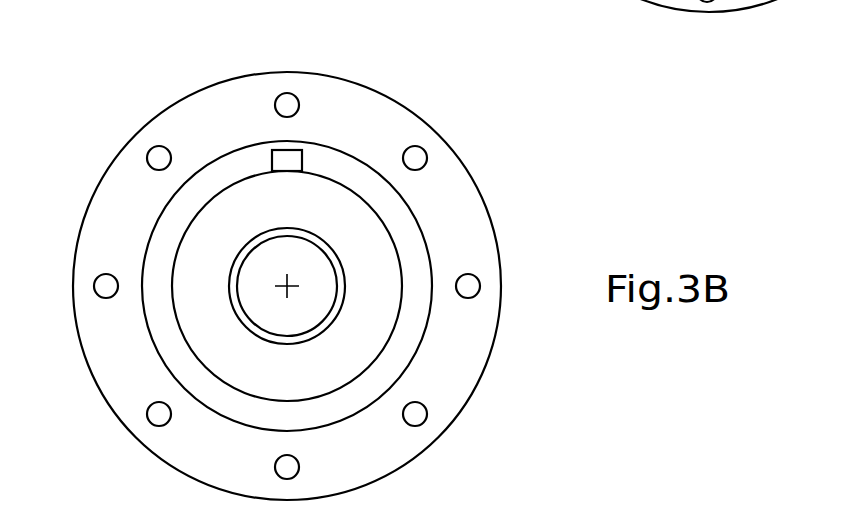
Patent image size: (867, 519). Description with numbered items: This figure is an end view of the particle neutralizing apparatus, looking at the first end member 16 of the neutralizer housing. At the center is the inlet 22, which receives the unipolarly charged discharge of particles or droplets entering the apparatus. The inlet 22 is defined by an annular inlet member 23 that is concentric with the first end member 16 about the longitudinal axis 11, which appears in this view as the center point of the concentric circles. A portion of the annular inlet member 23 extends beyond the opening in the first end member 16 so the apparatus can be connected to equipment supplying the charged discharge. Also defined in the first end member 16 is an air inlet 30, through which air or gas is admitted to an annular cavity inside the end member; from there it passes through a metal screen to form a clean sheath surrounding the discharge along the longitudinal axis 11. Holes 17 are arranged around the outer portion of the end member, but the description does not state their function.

The longitudinal axis 11 is at (285, 278).
The first end member 16 is at (460, 227).
The bolt holes 17 is at (289, 100).
The inlet 22 is at (273, 302).
The annular inlet member 23 is at (230, 272).
The air inlet 30 is at (273, 152).